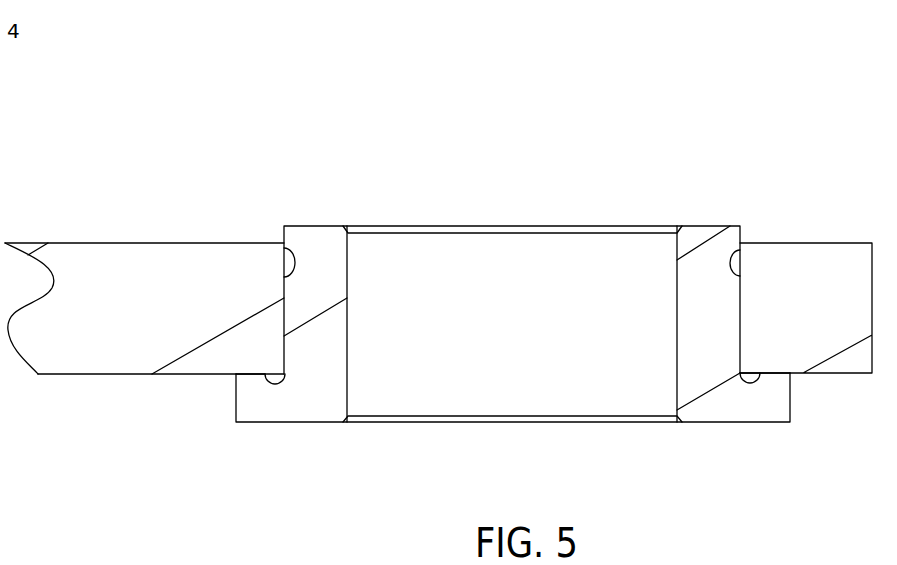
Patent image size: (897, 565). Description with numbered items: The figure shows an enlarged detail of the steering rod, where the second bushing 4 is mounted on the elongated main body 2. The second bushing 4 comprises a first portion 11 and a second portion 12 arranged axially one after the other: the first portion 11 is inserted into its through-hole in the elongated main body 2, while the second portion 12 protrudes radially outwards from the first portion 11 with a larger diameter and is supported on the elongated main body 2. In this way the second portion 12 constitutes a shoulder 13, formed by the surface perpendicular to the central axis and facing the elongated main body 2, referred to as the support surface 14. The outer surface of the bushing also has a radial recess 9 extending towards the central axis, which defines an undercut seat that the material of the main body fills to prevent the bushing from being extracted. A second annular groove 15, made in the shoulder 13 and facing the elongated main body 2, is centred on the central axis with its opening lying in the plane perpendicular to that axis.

The elongated main body 2 is at (97, 293).
The second bushing 4 is at (578, 197).
The radial recess 9 is at (273, 258).
The first portion 11 is at (316, 292).
The second portion 12 is at (290, 402).
The shoulder 13 is at (763, 402).
The support surface 14 is at (774, 371).
The second annular groove 15 is at (750, 367).